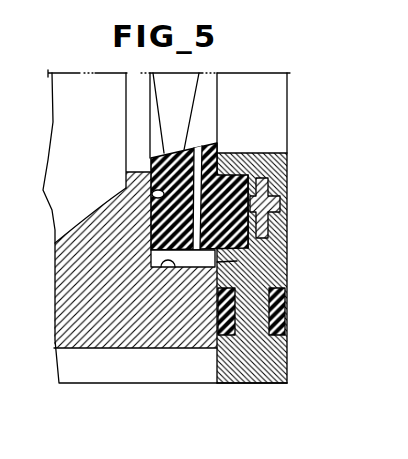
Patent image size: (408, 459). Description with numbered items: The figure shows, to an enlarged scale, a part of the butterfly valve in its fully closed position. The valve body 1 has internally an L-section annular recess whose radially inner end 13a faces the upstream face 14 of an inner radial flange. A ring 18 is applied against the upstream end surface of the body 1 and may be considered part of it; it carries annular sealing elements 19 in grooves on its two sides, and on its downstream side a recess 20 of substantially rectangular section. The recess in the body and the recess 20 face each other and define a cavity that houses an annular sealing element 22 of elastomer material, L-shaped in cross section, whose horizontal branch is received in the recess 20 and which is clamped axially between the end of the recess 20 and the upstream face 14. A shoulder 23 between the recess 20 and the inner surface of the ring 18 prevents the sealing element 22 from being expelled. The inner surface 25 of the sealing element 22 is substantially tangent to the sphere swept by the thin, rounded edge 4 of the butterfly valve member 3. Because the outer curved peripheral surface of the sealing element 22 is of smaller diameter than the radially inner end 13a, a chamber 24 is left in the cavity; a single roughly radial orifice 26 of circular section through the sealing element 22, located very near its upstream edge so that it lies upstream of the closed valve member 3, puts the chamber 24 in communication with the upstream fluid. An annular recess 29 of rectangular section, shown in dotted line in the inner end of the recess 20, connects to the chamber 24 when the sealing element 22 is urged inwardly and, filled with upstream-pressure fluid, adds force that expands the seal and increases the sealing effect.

The body 1 is at (78, 302).
The butterfly valve member 3 is at (193, 92).
The edge 4 is at (177, 151).
The radially inner end of the recess 13a is at (167, 268).
The upstream face of the flange 14 is at (151, 194).
The ring 18 is at (262, 357).
The annular sealing elements 19 is at (280, 299).
The recess 20 is at (253, 186).
The annular sealing element 22 is at (222, 154).
The shoulder 23 is at (233, 153).
The chamber 24 is at (237, 261).
The inner surface of the sealing element 25 is at (159, 152).
The orifice 26 is at (166, 222).
The annular recess 29 is at (266, 207).